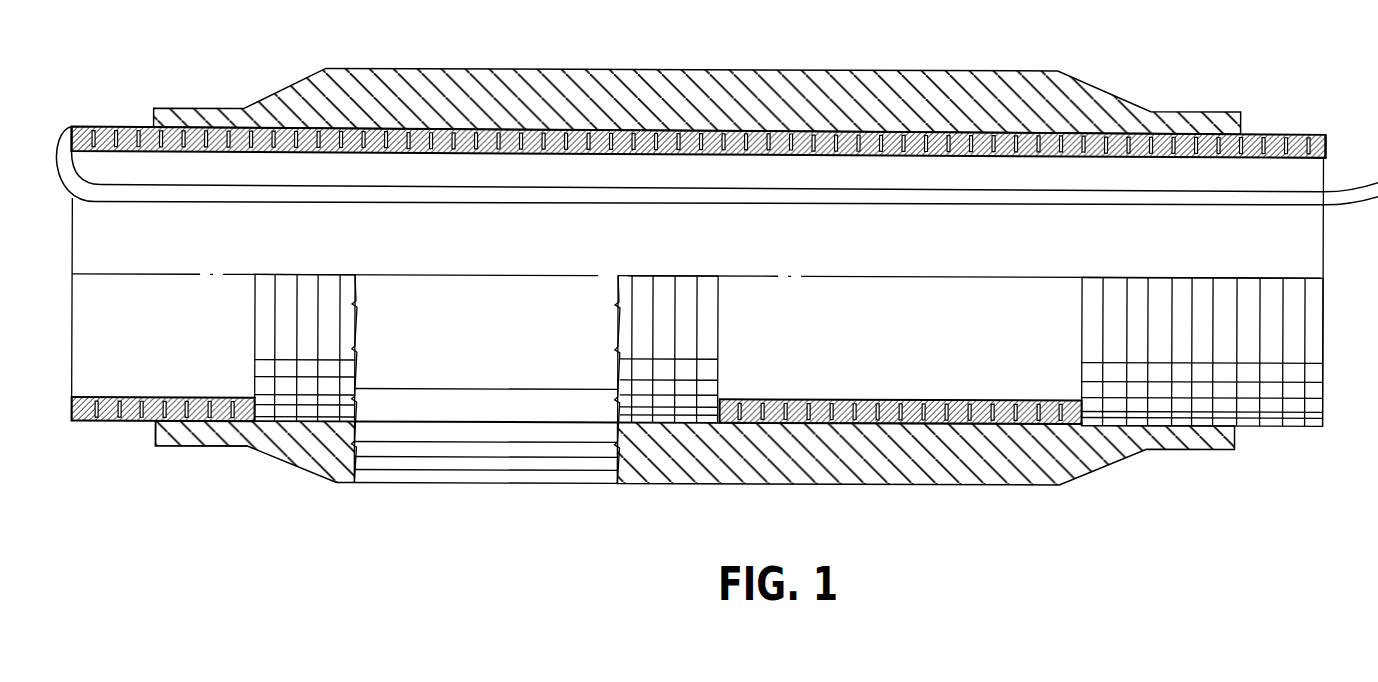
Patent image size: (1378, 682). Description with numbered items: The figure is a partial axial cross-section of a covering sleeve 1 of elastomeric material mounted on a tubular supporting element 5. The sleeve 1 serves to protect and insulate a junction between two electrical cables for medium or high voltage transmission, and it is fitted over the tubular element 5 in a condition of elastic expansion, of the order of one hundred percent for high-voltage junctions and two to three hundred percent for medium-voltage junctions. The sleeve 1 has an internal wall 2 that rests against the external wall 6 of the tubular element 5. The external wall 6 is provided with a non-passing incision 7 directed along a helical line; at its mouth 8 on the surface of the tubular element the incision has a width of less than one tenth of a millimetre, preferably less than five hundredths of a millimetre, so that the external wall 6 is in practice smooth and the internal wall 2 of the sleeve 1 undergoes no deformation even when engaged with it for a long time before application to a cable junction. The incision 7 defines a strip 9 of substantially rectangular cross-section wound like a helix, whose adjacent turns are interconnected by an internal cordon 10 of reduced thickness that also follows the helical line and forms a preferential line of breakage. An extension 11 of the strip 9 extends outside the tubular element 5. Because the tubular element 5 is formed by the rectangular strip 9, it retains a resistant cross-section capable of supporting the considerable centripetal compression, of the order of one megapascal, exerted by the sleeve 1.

The covering sleeve 1 is at (843, 92).
The internal wall 2 is at (490, 127).
The tubular supporting element 5 is at (1275, 130).
The external wall 6 is at (128, 127).
The non-passing incision 7 is at (125, 151).
The mouth 8 is at (101, 127).
The strip 9 is at (308, 152).
The internal cordon 10 is at (680, 154).
The extension of the strip 11 is at (1022, 197).